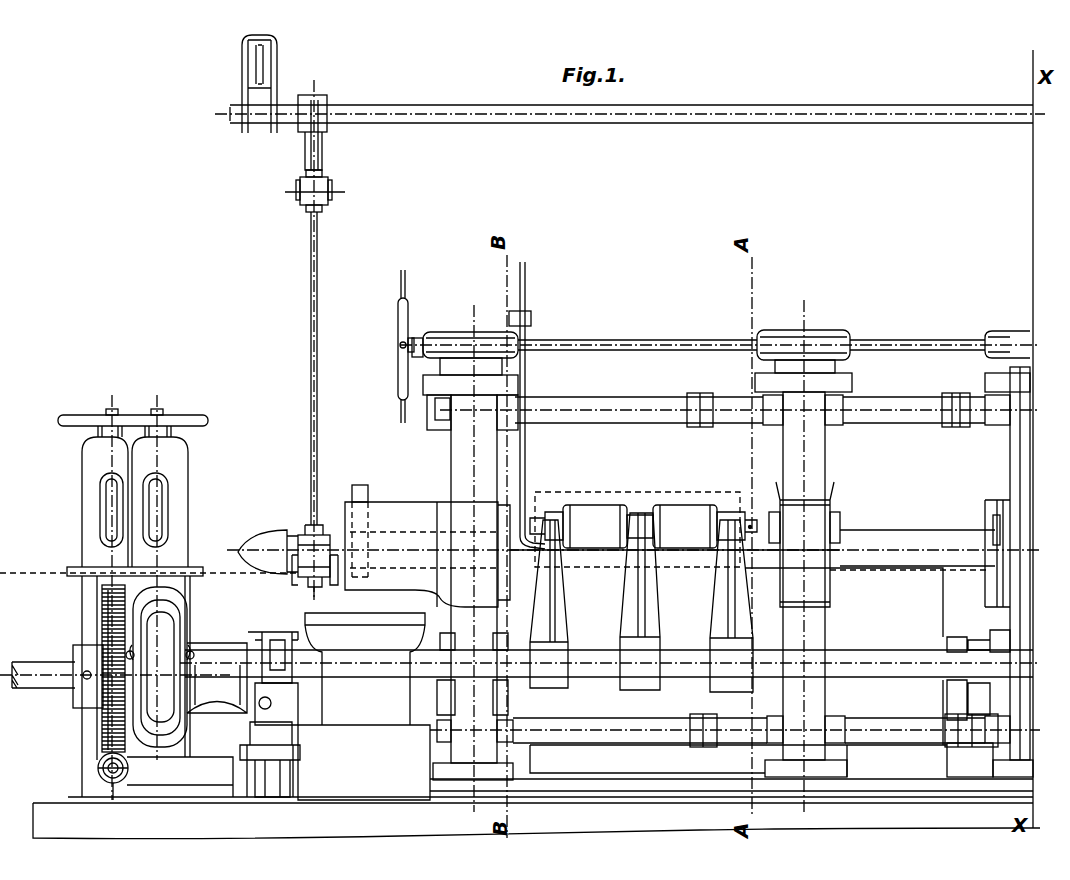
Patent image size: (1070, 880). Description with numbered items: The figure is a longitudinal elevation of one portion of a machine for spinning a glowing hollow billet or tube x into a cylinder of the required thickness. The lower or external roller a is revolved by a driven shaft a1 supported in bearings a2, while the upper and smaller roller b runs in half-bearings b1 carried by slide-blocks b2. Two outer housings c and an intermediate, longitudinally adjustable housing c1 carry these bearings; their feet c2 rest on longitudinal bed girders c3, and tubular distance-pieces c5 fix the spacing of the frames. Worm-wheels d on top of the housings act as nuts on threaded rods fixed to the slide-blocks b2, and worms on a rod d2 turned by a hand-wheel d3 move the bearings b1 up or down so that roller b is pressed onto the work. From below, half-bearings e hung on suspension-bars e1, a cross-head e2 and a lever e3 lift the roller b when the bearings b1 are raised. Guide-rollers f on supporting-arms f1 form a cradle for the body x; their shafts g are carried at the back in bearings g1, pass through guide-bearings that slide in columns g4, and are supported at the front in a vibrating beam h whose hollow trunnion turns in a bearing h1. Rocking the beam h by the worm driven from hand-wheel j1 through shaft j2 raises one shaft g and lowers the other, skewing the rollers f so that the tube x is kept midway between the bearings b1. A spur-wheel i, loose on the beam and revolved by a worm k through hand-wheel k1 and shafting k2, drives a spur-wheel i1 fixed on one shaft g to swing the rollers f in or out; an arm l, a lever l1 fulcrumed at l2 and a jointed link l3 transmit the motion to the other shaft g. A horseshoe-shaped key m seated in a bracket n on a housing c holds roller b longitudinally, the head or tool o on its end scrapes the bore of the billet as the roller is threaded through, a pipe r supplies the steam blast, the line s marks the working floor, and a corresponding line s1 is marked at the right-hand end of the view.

The lower roller a is at (761, 672).
The driven shaft a1 is at (49, 663).
The roller bearings a2 is at (446, 645).
The upper roller b is at (320, 532).
The half-bearings b1 is at (520, 448).
The slide-blocks b2 is at (775, 502).
The outer housings c is at (458, 445).
The intermediate housing c1 is at (787, 447).
The housing feet c2 is at (447, 770).
The bed frame c3 is at (555, 785).
The tubular distance-pieces c5 is at (638, 400).
The worm-wheels d is at (443, 336).
The worm rod d2 is at (638, 343).
The hand-actuating wheel d3 is at (400, 372).
The lower half-bearings e is at (308, 545).
The suspension-bars e1 is at (311, 327).
The cross-head e2 is at (328, 192).
The lifting lever e3 is at (327, 104).
The guide-rollers f is at (685, 520).
The supporting-arms f1 is at (627, 607).
The roller-arm shafts g is at (222, 650).
The back-end bearings g1 is at (613, 668).
The guide columns g4 is at (364, 706).
The vibrating beam h is at (176, 623).
The beam bearing h1 is at (217, 678).
The spur-wheel i is at (102, 748).
The shaft spur-wheel i1 is at (110, 601).
The beam hand-wheel j1 is at (182, 418).
The beam worm shaft j2 is at (160, 504).
The worm k is at (99, 770).
The roller hand-wheel k1 is at (88, 418).
The shafting k2 is at (110, 510).
The arm l is at (280, 637).
The lever l1 is at (266, 772).
The fulcrum l2 is at (241, 762).
The jointed link l3 is at (272, 702).
The horseshoe-shaped key m is at (362, 496).
The bracket n is at (396, 516).
The head or tool o is at (256, 541).
The steam-blast pipe r is at (523, 368).
The floor line s is at (38, 573).
The center line s1 is at (988, 568).
The hollow body or tube x is at (575, 492).